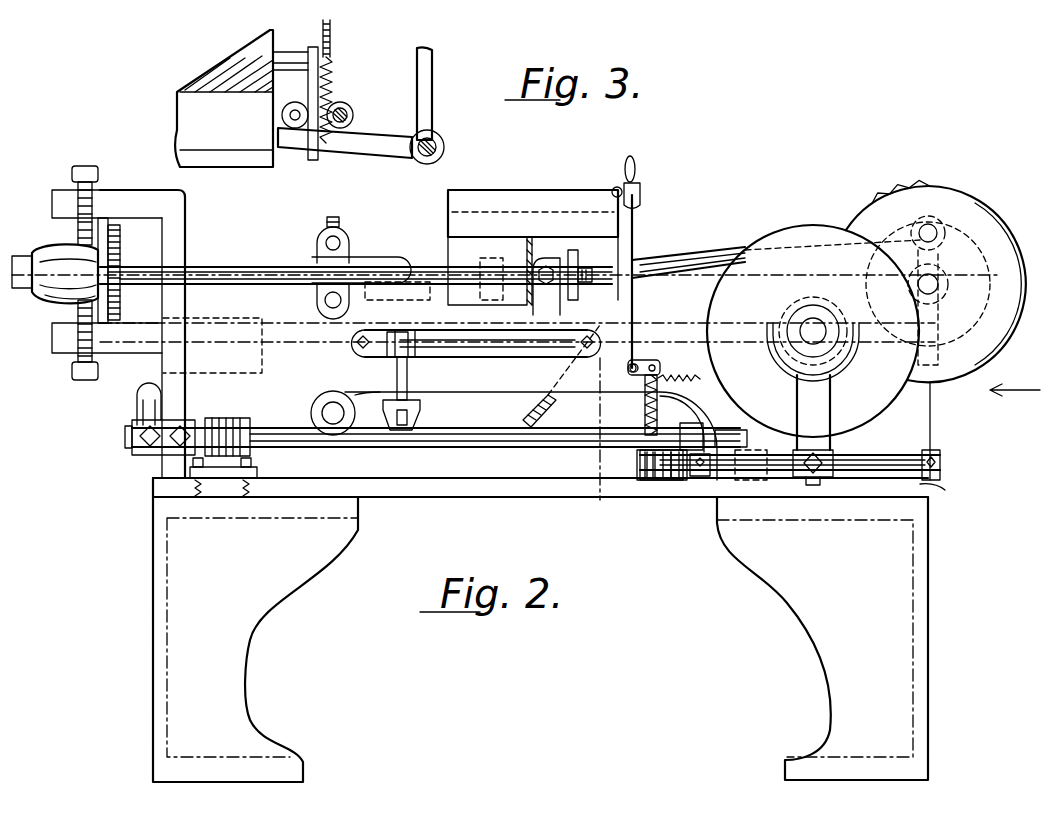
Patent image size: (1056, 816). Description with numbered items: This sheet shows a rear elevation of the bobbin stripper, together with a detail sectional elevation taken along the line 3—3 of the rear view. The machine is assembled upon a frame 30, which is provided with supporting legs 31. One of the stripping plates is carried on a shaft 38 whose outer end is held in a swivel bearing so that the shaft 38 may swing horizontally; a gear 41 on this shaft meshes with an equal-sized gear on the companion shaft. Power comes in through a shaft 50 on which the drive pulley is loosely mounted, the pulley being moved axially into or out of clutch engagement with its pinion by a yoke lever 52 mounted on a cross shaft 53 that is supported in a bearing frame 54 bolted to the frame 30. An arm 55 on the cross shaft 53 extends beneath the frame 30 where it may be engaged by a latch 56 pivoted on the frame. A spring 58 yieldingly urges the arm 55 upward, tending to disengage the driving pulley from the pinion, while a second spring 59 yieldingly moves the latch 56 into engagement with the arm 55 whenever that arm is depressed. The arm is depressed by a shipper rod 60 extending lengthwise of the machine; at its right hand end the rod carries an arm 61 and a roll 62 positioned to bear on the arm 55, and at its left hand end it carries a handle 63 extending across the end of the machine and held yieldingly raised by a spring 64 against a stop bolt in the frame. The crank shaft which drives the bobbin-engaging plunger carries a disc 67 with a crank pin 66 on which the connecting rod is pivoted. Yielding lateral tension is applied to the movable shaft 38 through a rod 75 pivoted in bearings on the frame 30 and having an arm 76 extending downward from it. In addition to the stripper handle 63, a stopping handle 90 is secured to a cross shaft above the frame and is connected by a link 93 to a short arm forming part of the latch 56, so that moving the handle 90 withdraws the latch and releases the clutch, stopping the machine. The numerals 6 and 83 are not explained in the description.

In FIG. 2, the line 3— 3 is at (605, 431).
In FIG. 2, the direction arrow 6 is at (1015, 382).
In FIG. 2, the frame 30 is at (486, 393).
In FIG. 2, the supporting legs 31 is at (540, 630).
In FIG. 2, the shaft 38 is at (226, 265).
In FIG. 2, the gear 41 is at (120, 243).
In FIG. 2, the shaft 50 is at (811, 322).
In FIG. 3, the yoke lever 52 is at (432, 80).
In FIG. 2, the yoke lever 52 is at (822, 398).
In FIG. 3, the cross shaft 53 is at (445, 145).
In FIG. 2, the cross shaft 53 is at (848, 455).
In FIG. 2, the bearing frame 54 is at (945, 494).
In FIG. 3, the arm 55 is at (372, 165).
In FIG. 3, the latch 56 is at (313, 160).
In FIG. 3, the spring 58 is at (332, 88).
In FIG. 2, the spring 58 is at (646, 404).
In FIG. 2, the second spring 59 is at (668, 376).
In FIG. 3, the shipper rod 60 is at (350, 108).
In FIG. 2, the shipper rod 60 is at (462, 450).
In FIG. 3, the arm 61 is at (300, 105).
In FIG. 3, the roll 62 is at (285, 113).
In FIG. 2, the handle 63 is at (137, 398).
In FIG. 2, the spring 64 is at (546, 408).
In FIG. 2, the crank pin 66 is at (930, 226).
In FIG. 2, the disc 67 is at (676, 255).
In FIG. 2, the rod 75 is at (470, 350).
In FIG. 2, the arm 76 is at (406, 386).
In FIG. 2, the bracket 83 is at (562, 282).
In FIG. 2, the handle 90 is at (640, 172).
In FIG. 2, the link 93 is at (634, 303).